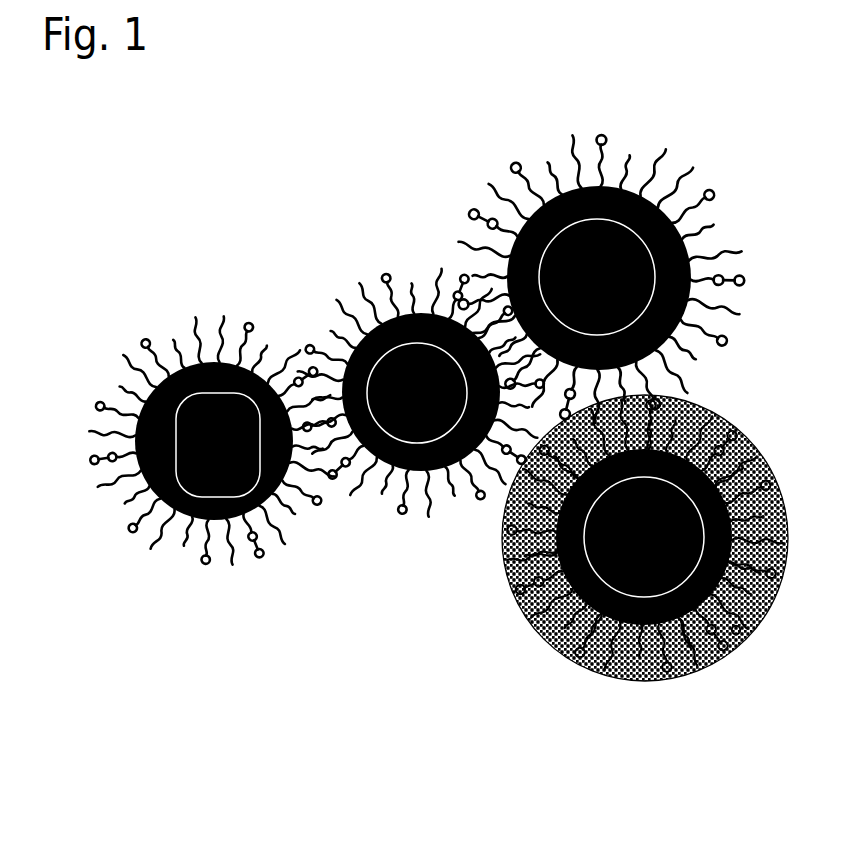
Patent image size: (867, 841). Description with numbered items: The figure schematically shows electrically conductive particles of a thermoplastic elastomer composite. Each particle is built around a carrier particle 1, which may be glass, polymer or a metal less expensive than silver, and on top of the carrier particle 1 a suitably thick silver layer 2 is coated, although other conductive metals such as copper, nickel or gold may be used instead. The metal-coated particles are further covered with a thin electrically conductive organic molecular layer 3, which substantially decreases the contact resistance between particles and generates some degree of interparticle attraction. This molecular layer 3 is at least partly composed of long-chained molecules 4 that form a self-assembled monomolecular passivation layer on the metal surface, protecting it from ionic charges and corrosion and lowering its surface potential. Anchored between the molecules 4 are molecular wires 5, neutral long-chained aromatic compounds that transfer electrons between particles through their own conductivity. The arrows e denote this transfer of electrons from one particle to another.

The carrier particle 1 is at (200, 535).
The silver layer 2 is at (268, 512).
The electrically conductive organic molecular layer 3 is at (628, 673).
The long-chained molecules 4 is at (670, 670).
The molecular wires 5 is at (738, 640).
The arrows e is at (140, 470).